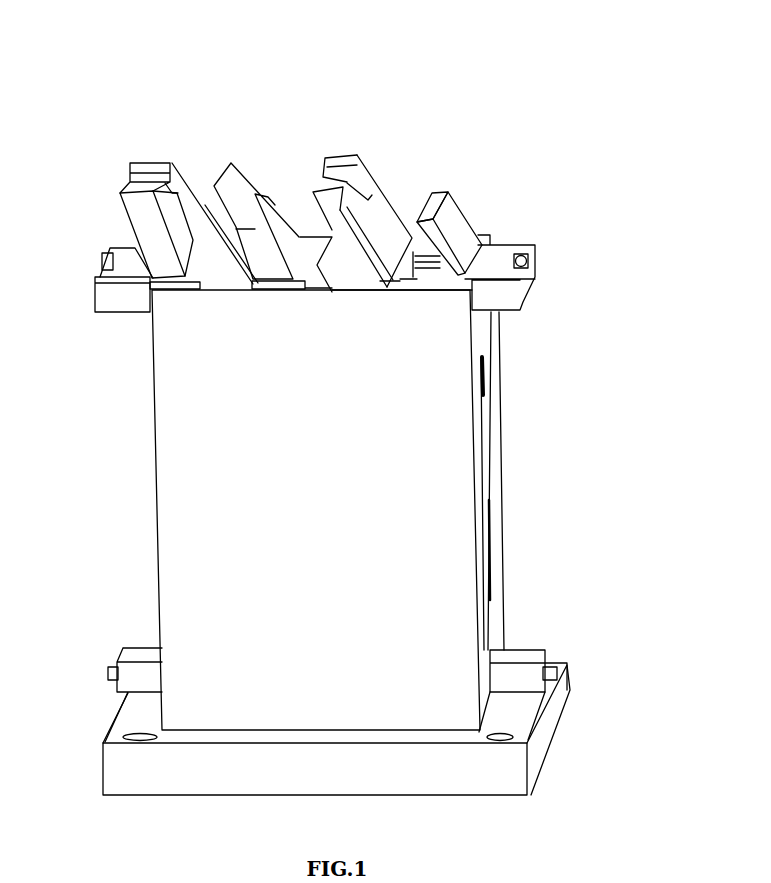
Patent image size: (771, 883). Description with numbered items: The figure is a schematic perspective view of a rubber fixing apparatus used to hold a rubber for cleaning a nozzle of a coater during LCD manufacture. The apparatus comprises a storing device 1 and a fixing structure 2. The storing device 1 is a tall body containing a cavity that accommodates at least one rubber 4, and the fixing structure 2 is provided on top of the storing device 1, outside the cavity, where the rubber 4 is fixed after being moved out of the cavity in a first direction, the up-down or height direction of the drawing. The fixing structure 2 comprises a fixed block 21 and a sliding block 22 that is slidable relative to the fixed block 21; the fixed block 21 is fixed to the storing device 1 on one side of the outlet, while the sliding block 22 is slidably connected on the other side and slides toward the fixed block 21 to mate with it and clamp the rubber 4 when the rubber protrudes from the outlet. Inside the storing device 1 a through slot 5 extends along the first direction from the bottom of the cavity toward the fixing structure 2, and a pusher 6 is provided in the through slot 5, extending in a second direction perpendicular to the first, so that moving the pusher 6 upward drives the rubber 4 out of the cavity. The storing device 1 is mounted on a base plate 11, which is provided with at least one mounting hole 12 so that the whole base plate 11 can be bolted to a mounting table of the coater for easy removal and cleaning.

The storing device 1 is at (193, 585).
The fixing structure 2 is at (330, 97).
The rubber 4 is at (172, 163).
The fixed block 21 is at (273, 232).
The sliding block 22 is at (135, 247).
The through slot 5 is at (490, 498).
The pusher 6 is at (517, 673).
The base plate 11 is at (500, 770).
The mounting hole 12 is at (530, 734).